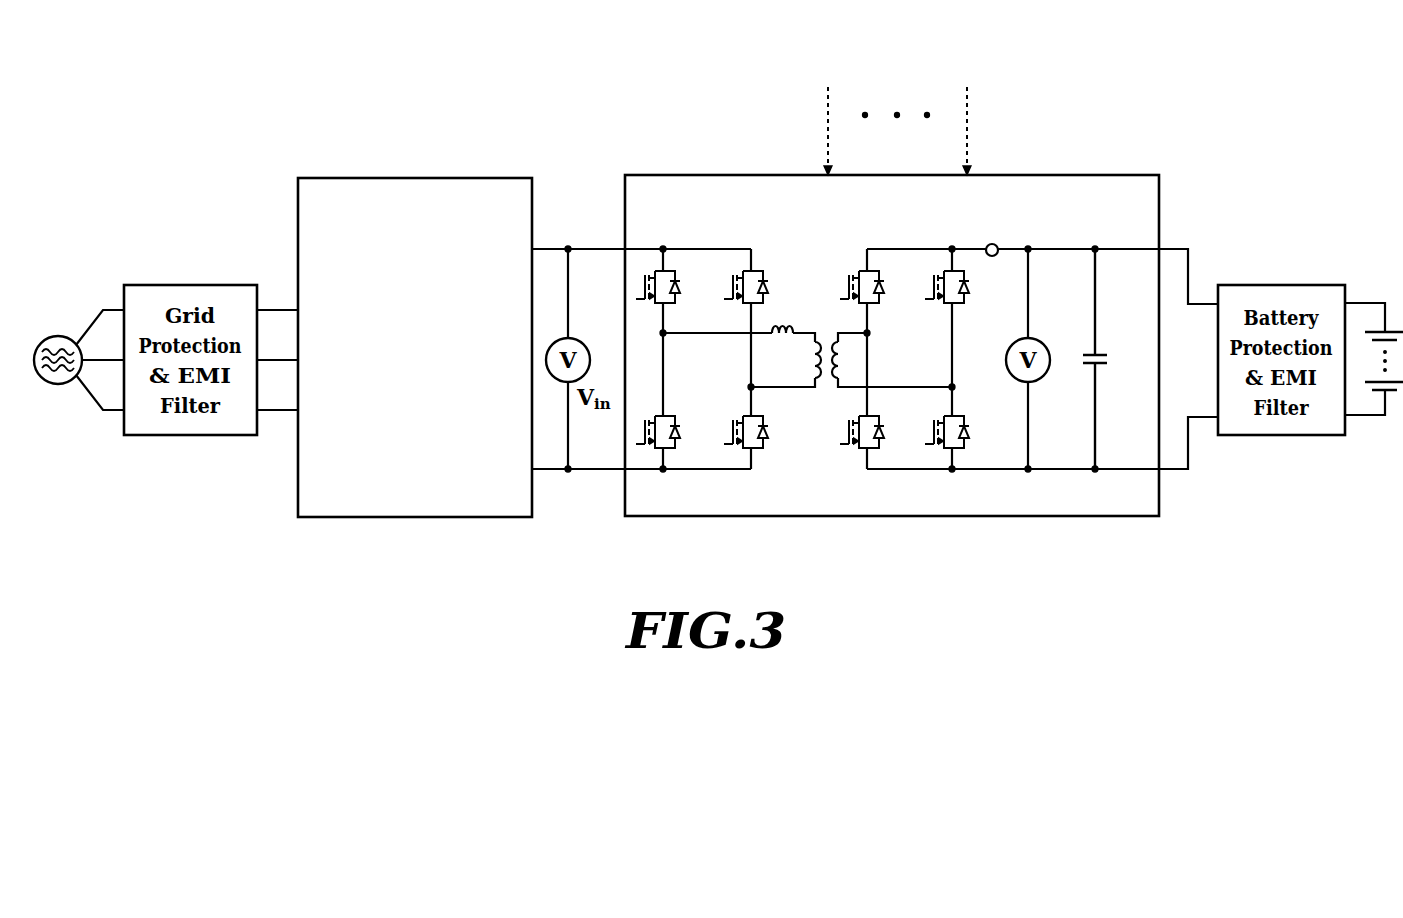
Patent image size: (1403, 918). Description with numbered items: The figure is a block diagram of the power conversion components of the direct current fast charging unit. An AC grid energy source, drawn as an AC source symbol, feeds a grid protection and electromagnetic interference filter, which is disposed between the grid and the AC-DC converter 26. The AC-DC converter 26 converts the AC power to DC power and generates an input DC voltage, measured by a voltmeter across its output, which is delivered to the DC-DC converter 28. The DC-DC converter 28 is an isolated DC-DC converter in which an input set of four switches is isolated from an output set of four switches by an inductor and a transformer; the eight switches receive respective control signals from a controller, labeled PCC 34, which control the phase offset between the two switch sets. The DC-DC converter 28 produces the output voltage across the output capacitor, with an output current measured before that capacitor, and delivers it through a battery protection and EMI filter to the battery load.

The AC-DC converter 26 is at (343, 178).
The DC-DC converter 28 is at (672, 175).
The power conversion controller (PCC) control signals 34 is at (881, 99).